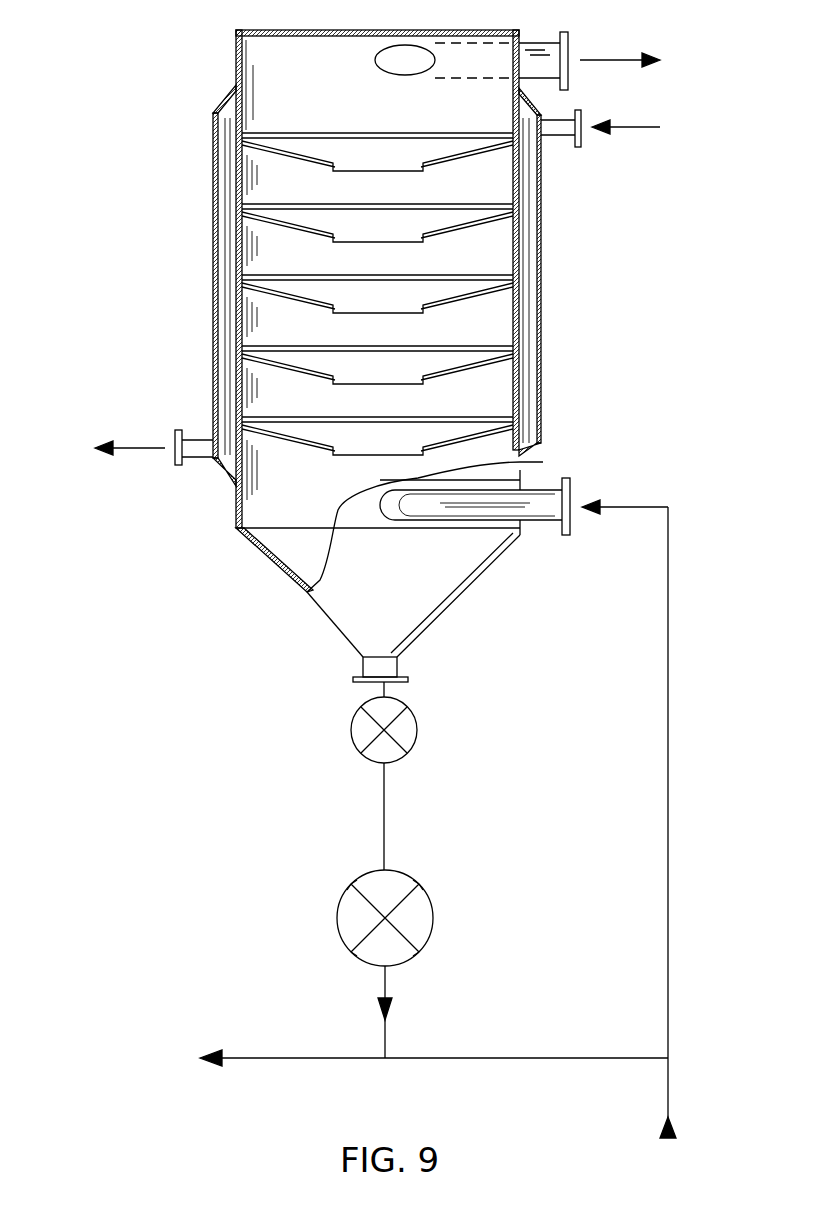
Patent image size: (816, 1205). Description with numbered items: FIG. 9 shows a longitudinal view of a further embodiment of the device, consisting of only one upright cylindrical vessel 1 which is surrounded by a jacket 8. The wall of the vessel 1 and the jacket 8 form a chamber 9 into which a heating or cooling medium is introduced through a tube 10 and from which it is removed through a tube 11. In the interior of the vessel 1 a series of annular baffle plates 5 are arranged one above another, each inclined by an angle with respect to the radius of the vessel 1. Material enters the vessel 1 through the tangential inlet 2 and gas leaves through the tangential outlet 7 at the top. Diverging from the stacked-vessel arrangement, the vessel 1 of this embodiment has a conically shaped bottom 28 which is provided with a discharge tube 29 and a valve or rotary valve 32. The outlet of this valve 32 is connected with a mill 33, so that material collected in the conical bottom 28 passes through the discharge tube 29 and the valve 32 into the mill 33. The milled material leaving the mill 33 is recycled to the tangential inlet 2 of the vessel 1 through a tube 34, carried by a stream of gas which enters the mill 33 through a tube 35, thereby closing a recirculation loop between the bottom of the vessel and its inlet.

The upright cylindrical vessel 1 is at (236, 68).
The tangential inlet 2 is at (570, 482).
The annular baffle plates 5 is at (266, 224).
The tangential outlet 7 is at (568, 43).
The jacket 8 is at (213, 165).
The chamber 9 is at (225, 318).
The tube 10 is at (581, 112).
The tube 11 is at (176, 430).
The conically shaped bottom 28 is at (270, 560).
The discharge tube 29 is at (355, 677).
The valve or rotary valve 32 is at (351, 732).
The mill 33 is at (337, 920).
The tube 34 is at (518, 1058).
The tube 35 is at (200, 1058).